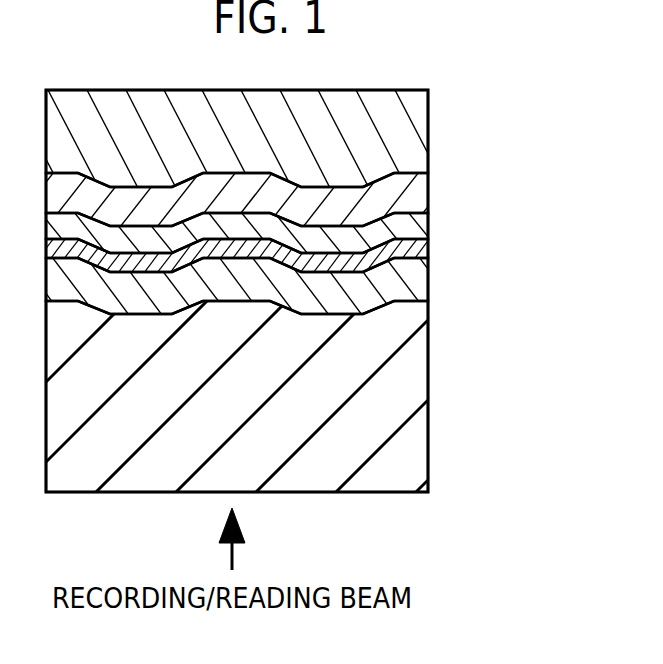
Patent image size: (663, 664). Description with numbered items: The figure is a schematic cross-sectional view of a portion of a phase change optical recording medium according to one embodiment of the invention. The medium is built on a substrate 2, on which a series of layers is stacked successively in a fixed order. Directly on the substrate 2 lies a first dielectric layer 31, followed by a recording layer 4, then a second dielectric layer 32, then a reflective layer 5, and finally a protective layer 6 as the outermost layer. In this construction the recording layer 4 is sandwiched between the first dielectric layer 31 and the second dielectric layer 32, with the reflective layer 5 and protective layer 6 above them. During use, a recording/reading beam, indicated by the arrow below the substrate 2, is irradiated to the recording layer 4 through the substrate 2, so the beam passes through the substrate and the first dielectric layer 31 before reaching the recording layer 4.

The substrate 2 is at (423, 388).
The first dielectric layer 31 is at (422, 280).
The recording layer 4 is at (422, 243).
The second dielectric layer 32 is at (422, 225).
The reflective layer 5 is at (422, 198).
The protective layer 6 is at (422, 140).